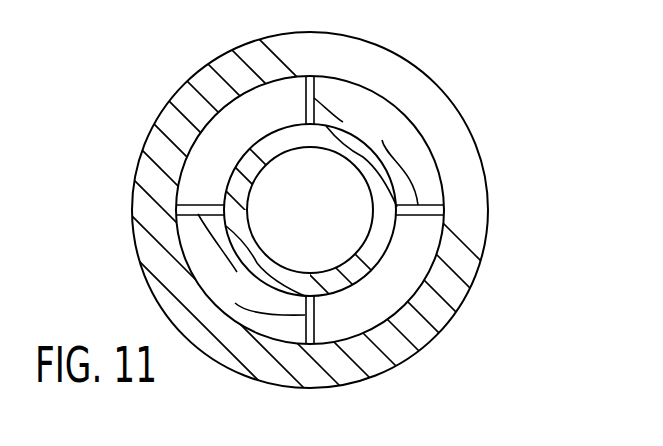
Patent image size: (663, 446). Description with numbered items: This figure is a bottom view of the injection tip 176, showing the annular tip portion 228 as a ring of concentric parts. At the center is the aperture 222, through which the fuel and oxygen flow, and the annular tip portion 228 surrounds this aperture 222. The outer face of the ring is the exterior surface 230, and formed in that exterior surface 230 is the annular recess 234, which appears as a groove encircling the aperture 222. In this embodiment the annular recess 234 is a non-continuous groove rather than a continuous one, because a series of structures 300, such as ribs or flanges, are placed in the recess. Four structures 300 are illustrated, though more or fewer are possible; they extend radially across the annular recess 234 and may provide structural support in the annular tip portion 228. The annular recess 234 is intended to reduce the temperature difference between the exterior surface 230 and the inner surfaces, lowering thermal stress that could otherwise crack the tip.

The injection tip 176 is at (493, 45).
The annular tip portion 228 is at (170, 77).
The exterior surface 230 is at (152, 258).
The annular recess 234 is at (373, 317).
The aperture 222 is at (353, 225).
The structures 300 is at (343, 122).